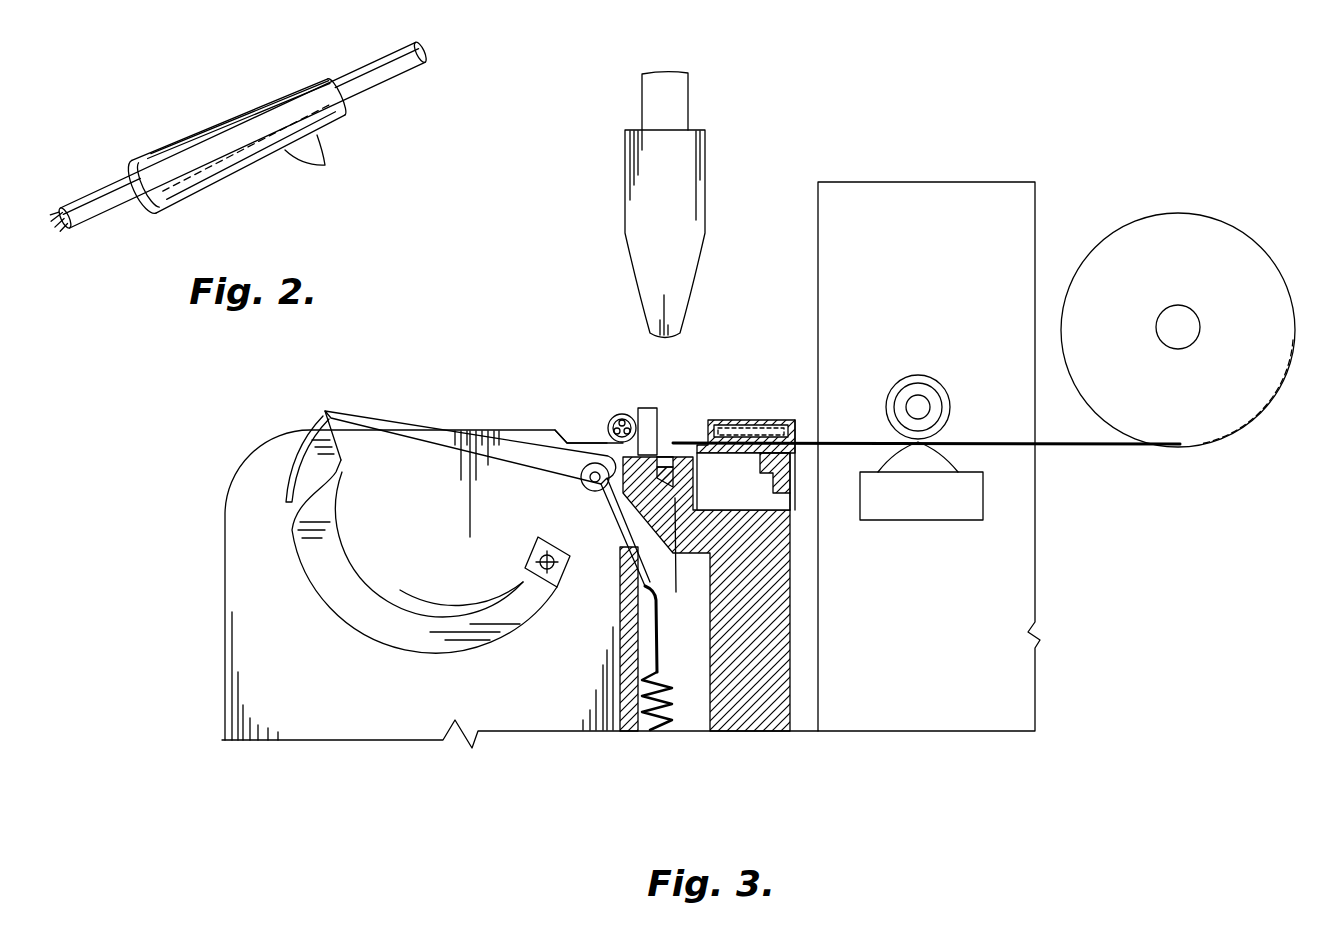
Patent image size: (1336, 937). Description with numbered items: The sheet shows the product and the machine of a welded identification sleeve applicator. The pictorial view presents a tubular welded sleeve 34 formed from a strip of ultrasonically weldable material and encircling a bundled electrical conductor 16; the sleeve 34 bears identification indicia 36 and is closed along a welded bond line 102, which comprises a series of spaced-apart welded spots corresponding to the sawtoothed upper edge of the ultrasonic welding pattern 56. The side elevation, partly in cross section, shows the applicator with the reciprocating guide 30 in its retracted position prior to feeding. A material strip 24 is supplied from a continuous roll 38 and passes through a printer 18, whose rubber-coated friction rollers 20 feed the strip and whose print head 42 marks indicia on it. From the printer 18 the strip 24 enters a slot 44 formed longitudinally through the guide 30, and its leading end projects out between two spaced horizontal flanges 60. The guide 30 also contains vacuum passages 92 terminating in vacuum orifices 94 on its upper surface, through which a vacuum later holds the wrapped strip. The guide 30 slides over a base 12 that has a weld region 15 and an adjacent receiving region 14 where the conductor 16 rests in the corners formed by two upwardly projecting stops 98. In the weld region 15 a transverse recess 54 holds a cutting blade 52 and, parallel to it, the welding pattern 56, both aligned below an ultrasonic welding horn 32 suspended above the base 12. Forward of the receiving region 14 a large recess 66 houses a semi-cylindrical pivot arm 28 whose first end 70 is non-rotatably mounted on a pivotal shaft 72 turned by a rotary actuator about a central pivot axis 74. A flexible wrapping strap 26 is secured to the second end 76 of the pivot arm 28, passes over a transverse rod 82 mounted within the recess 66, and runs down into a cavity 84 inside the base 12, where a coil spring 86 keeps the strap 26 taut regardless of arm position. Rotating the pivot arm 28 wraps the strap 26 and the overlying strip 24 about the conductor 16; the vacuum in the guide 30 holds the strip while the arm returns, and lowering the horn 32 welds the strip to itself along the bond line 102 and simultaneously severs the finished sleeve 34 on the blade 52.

In FIG. 3, the base 12 is at (750, 733).
In FIG. 3, the receiving region 14 is at (592, 446).
In FIG. 3, the weld region 15 is at (692, 435).
In FIG. 2, the bundled electrical conductor 16 is at (102, 188).
In FIG. 3, the bundled electrical conductor 16 is at (609, 421).
In FIG. 3, the printer 18 is at (925, 733).
In FIG. 3, the friction rollers 20 is at (940, 385).
In FIG. 3, the material strip 24 is at (1078, 447).
In FIG. 3, the flexible wrapping strap 26 is at (363, 416).
In FIG. 3, the pivot arm 28 is at (362, 652).
In FIG. 3, the reciprocating guide 30 is at (796, 419).
In FIG. 3, the ultrasonic welding horn 32 is at (692, 160).
In FIG. 2, the welded sleeve 34 is at (246, 184).
In FIG. 2, the identification indicia 36 is at (216, 134).
In FIG. 3, the continuous roll 38 is at (1205, 237).
In FIG. 3, the print head 42 is at (983, 507).
In FIG. 3, the slot 44 is at (793, 482).
In FIG. 3, the cutting blade 52 is at (679, 432).
In FIG. 3, the transverse recess 54 is at (688, 556).
In FIG. 3, the ultrasonic welding pattern 56 is at (666, 462).
In FIG. 3, the horizontal flanges 60 is at (712, 423).
In FIG. 3, the recess 66 is at (240, 692).
In FIG. 3, the first end of pivot arm 70 is at (525, 582).
In FIG. 3, the pivotal shaft 72 is at (550, 572).
In FIG. 3, the central pivot axis 74 is at (553, 540).
In FIG. 3, the second end of pivot arm 76 is at (313, 433).
In FIG. 3, the transverse rod 82 is at (598, 492).
In FIG. 3, the cavity 84 is at (695, 733).
In FIG. 3, the coil spring 86 is at (640, 732).
In FIG. 3, the vacuum passages 92 is at (762, 427).
In FIG. 3, the vacuum orifices 94 is at (750, 421).
In FIG. 3, the stops 98 is at (643, 407).
In FIG. 2, the welded bond line 102 is at (326, 162).